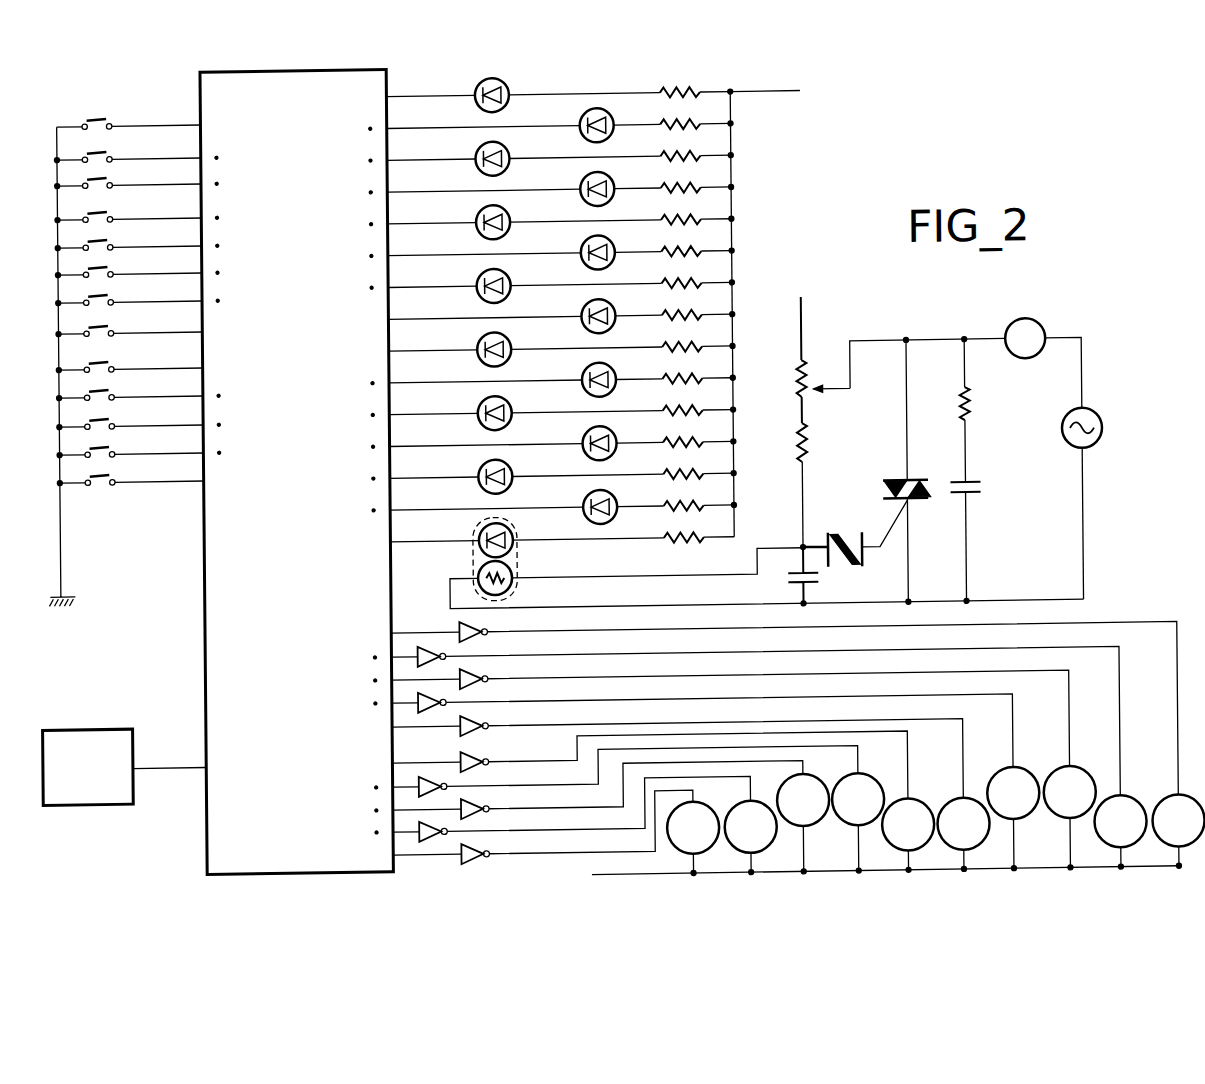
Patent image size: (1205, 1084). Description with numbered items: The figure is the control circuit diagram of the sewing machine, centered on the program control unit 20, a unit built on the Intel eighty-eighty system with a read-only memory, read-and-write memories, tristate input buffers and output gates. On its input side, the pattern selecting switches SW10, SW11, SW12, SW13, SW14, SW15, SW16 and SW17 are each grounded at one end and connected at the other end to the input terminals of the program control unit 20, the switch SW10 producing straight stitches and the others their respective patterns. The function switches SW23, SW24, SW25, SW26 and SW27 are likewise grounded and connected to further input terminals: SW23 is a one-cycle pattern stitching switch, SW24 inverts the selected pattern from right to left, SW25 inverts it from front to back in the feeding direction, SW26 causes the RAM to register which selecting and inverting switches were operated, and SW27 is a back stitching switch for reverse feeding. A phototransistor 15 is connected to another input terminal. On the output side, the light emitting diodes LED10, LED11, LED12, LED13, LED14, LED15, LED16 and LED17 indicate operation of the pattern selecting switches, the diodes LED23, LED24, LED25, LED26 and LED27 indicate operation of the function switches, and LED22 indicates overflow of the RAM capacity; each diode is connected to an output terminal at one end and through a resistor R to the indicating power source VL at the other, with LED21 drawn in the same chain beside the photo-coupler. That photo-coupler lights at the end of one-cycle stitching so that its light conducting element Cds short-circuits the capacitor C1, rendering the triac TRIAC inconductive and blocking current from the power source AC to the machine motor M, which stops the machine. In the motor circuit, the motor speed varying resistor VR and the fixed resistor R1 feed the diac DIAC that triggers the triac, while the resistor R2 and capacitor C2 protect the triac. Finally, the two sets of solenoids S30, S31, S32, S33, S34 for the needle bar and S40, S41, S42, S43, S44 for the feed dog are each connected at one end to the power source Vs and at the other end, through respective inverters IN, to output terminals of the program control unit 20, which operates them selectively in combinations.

The program control unit 20 is at (280, 606).
The phototransistor 15 is at (97, 789).
The pattern selecting switch SW10 is at (130, 321).
The pattern selecting switch SW11 is at (130, 290).
The pattern selecting switch SW12 is at (130, 262).
The pattern selecting switch SW13 is at (129, 235).
The pattern selecting switch SW14 is at (129, 207).
The pattern selecting switch SW15 is at (129, 173).
The pattern selecting switch SW16 is at (129, 147).
The pattern selecting switch SW17 is at (128, 114).
The one-cycle pattern stitching switch SW23 is at (132, 470).
The function switch SW24 is at (131, 442).
The function switch SW25 is at (131, 414).
The function switch SW26 is at (131, 385).
The back stitching switch SW27 is at (131, 357).
The light emitting diode LED10 is at (561, 312).
The light emitting diode LED11 is at (561, 280).
The light emitting diode LED12 is at (561, 249).
The light emitting diode LED13 is at (560, 217).
The light emitting diode LED14 is at (560, 185).
The light emitting diode LED15 is at (560, 153).
The light emitting diode LED16 is at (559, 121).
The light emitting diode LED17 is at (559, 90).
The light emitting diode LED21 is at (562, 535).
The light emitting diode LED22 is at (563, 503).
The light emitting diode LED23 is at (563, 471).
The light emitting diode LED24 is at (562, 439).
The light emitting diode LED25 is at (562, 408).
The light emitting diode LED26 is at (562, 376).
The light emitting diode LED27 is at (561, 344).
The resistor R is at (702, 315).
The indicating power source VL is at (781, 103).
The light conducting element Cds is at (766, 559).
The motor speed varying resistor VR is at (883, 346).
The fixed resistor R1 is at (784, 472).
The capacitor C1 is at (792, 575).
The diac DIAC is at (855, 533).
The triac TRIAC is at (881, 471).
The resistor R2 is at (979, 411).
The capacitor C2 is at (977, 532).
The machine motor M is at (1043, 363).
The power source AC is at (1091, 493).
The inverter IN is at (440, 750).
The solenoid S30 is at (604, 833).
The solenoid S31 is at (612, 826).
The solenoid S32 is at (659, 818).
The solenoid S33 is at (666, 811).
The solenoid S34 is at (711, 803).
The solenoid S40 is at (739, 797).
The solenoid S41 is at (743, 785).
The solenoid S42 is at (792, 773).
The solenoid S43 is at (796, 761).
The solenoid S44 is at (845, 748).
The power source Vs is at (873, 874).